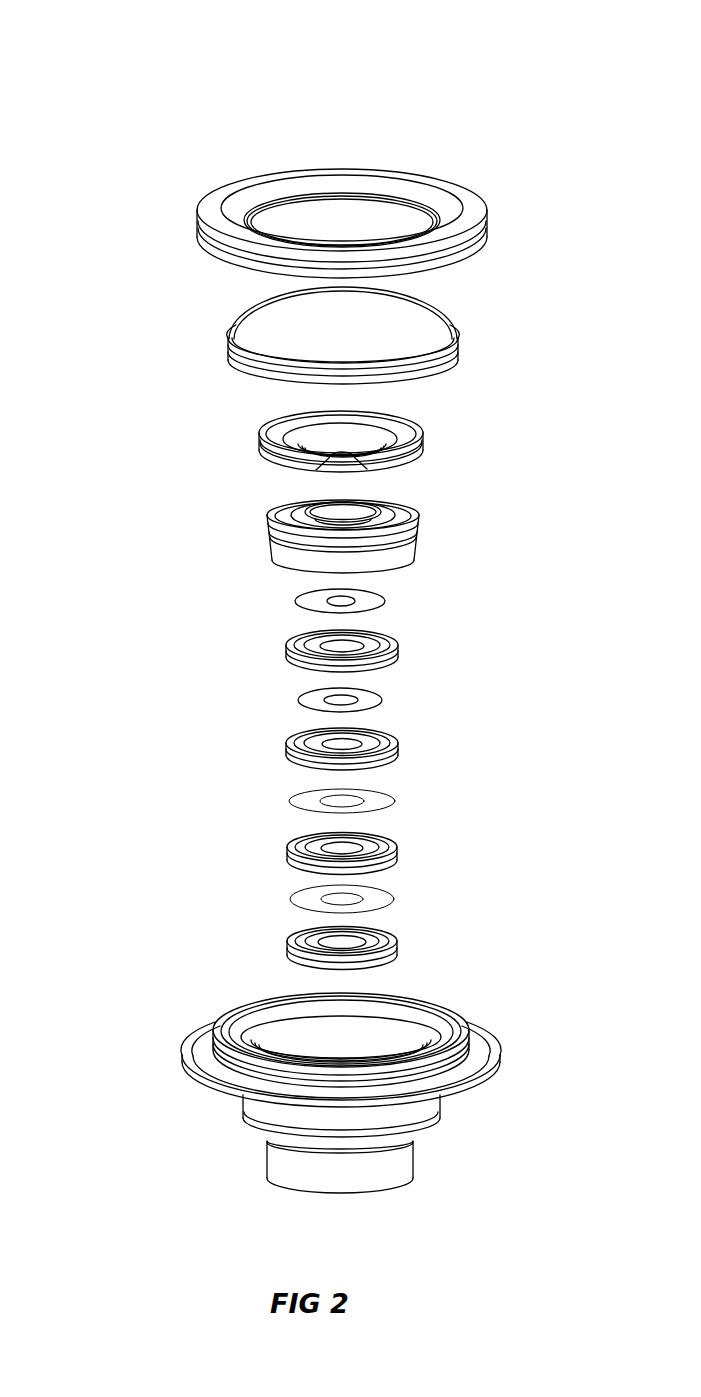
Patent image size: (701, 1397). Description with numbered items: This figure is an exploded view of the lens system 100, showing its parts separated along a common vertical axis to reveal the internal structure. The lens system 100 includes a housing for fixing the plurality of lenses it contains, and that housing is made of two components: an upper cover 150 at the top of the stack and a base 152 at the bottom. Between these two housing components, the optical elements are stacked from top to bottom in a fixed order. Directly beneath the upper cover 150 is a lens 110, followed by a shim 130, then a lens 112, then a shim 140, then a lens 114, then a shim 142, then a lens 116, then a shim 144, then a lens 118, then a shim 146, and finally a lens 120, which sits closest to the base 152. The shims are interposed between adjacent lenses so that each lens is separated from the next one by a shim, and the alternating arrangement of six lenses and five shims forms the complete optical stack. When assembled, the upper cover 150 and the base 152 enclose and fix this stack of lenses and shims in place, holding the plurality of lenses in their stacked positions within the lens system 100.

The lens system 100 is at (502, 117).
The upper cover 150 is at (197, 210).
The lens 110 is at (458, 340).
The shim 130 is at (260, 436).
The lens 112 is at (425, 515).
The shim 140 is at (283, 596).
The lens 114 is at (405, 650).
The shim 142 is at (288, 698).
The lens 116 is at (402, 743).
The shim 144 is at (288, 798).
The lens 118 is at (403, 848).
The shim 146 is at (288, 892).
The lens 120 is at (403, 935).
The base 152 is at (195, 1030).